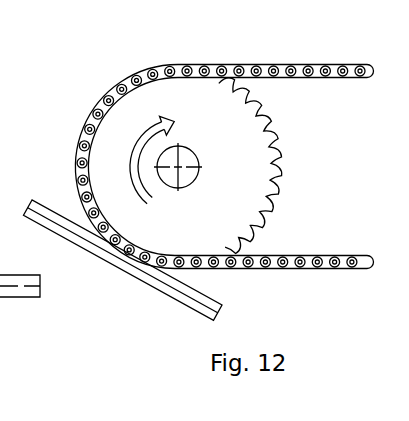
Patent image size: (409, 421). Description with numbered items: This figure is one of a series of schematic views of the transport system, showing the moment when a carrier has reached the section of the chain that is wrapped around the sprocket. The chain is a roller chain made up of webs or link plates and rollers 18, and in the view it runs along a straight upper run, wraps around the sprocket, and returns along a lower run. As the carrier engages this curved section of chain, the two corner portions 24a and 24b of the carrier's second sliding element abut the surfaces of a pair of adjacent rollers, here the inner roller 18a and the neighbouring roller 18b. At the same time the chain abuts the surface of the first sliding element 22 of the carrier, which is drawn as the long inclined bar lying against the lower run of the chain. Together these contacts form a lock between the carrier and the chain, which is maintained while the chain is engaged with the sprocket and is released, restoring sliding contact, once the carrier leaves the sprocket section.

The rollers 18 is at (187, 171).
The inner roller 18a is at (46, 181).
The roller 18b is at (113, 262).
The first sliding element 22 is at (295, 292).
The corner portion 24a is at (108, 191).
The corner portion 24b is at (208, 231).